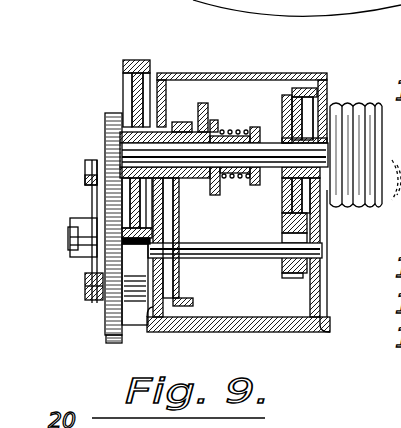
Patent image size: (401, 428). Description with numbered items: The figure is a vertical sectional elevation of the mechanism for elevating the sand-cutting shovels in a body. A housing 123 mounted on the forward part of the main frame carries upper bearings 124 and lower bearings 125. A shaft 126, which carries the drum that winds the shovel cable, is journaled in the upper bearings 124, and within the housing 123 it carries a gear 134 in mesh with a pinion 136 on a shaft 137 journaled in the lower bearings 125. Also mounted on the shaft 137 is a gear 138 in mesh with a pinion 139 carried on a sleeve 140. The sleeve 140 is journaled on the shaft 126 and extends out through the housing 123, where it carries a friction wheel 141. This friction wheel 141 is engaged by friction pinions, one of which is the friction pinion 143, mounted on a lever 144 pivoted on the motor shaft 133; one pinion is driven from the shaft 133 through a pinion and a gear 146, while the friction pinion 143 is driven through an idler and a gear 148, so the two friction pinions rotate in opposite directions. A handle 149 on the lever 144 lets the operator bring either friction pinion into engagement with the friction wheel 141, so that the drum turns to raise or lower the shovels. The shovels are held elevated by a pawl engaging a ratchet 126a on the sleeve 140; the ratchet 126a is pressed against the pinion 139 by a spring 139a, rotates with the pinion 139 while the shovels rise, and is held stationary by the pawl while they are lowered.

The housing 123 is at (273, 330).
The upper bearings 124 is at (400, 112).
The lower bearings 125 is at (322, 258).
The shaft 126 is at (275, 153).
The ratchet 126a is at (233, 129).
The motor shaft 133 is at (57, 247).
The gear 134 is at (298, 92).
The pinion 136 is at (322, 305).
The shaft 137 is at (272, 247).
The gear 138 is at (180, 298).
The pinion 139 is at (180, 122).
The spring 139a is at (204, 103).
The sleeve 140 is at (105, 132).
The friction wheel 141 is at (131, 60).
The friction pinion 143 is at (133, 305).
The lever 144 is at (100, 193).
The gear 146 is at (88, 150).
The gear 148 is at (110, 347).
The handle 149 is at (98, 300).